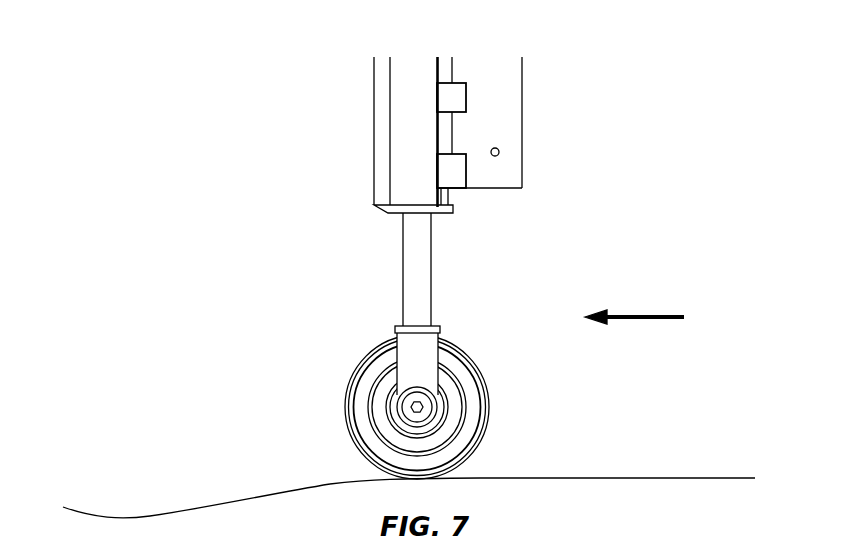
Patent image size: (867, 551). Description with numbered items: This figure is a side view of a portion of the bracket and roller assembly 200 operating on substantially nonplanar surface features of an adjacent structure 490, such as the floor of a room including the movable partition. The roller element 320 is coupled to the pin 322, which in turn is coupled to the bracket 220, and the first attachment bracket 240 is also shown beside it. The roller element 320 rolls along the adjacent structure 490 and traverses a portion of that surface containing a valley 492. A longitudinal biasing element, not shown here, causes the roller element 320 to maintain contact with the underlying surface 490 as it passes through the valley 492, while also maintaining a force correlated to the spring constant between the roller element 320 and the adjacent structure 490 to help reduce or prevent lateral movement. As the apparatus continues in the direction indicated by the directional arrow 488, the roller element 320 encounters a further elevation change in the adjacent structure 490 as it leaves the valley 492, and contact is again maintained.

The bracket and roller assembly 200 is at (216, 121).
The bracket 220 is at (373, 132).
The first attachment bracket 240 is at (522, 124).
The pin 322 is at (403, 250).
The roller element 320 is at (459, 348).
The directional arrow 488 is at (623, 315).
The adjacent structure 490 is at (637, 478).
The valley 492 is at (147, 485).